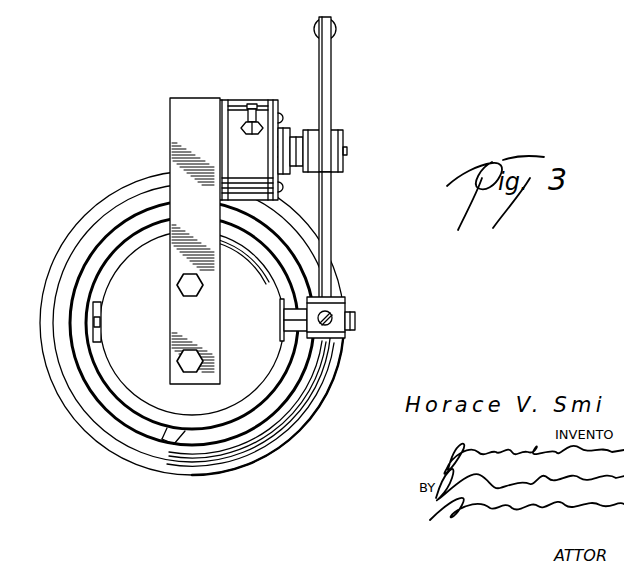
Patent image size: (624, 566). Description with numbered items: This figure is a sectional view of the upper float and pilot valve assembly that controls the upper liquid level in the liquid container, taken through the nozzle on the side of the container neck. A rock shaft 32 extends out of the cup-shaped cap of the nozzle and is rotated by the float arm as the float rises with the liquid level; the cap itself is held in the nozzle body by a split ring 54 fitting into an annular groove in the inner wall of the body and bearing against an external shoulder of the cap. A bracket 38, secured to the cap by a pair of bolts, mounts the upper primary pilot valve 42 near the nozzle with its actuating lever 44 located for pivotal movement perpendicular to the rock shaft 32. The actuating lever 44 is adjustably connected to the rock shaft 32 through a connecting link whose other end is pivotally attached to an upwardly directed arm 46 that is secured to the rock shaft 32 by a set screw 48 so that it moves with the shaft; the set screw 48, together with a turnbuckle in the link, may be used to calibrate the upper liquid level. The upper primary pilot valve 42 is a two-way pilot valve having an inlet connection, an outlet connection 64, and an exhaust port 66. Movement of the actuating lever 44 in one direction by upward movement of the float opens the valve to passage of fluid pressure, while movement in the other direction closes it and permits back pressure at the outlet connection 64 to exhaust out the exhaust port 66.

The rock shaft 32 is at (356, 320).
The bracket 38 is at (176, 112).
The upper primary pilot valve 42 is at (228, 100).
The actuating lever 44 is at (332, 72).
The upwardly directed arm 46 is at (331, 203).
The set screw 48 is at (330, 312).
The split ring 54 is at (212, 437).
The outlet connection 64 is at (253, 105).
The exhaust port 66 is at (249, 195).